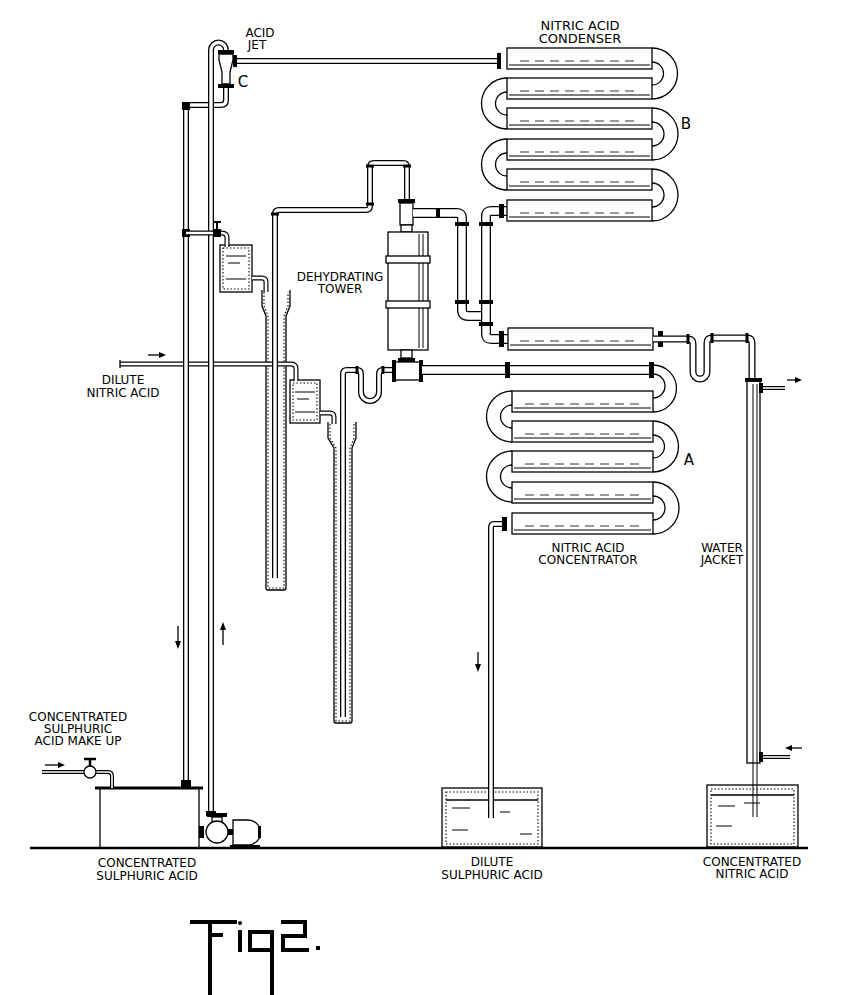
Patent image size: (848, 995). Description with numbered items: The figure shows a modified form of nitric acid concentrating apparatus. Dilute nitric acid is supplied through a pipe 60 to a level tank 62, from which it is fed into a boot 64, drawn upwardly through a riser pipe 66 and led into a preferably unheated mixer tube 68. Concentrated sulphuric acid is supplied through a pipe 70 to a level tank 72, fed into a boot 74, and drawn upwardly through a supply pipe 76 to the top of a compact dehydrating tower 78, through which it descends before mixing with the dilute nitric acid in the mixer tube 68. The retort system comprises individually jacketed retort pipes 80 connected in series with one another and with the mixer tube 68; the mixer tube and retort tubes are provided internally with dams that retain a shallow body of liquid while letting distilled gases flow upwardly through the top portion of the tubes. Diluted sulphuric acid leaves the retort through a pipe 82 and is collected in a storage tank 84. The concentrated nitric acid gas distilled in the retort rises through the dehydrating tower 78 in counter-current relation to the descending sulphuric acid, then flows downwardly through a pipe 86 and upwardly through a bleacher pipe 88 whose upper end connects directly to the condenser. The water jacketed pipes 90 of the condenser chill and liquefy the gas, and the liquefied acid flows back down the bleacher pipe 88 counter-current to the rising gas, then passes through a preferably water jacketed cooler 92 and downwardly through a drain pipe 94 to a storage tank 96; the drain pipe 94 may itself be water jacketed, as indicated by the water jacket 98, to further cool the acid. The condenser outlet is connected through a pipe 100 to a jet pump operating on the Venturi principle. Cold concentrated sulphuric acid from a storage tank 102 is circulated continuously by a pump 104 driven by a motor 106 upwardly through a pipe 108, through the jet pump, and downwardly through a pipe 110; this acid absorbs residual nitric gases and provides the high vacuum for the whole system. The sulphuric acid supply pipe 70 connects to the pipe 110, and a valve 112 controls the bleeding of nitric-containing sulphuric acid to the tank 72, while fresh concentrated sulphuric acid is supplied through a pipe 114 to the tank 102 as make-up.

The pipe 60 is at (136, 361).
The level tank 62 is at (303, 424).
The boot 64 is at (353, 534).
The riser pipe 66 is at (348, 407).
The mixer tube 68 is at (520, 378).
The pipe 70 is at (199, 230).
The level tank 72 is at (233, 294).
The boot 74 is at (286, 520).
The supply pipe 76 is at (278, 258).
The dehydrating tower 78 is at (387, 248).
The retort pipes 80 is at (598, 421).
The pipe 82 is at (495, 632).
The storage tank 84 is at (540, 822).
The pipe 86 is at (456, 262).
The bleacher pipe 88 is at (493, 272).
The water jacketed pipes 90 is at (655, 51).
The cooler 92 is at (657, 328).
The drain pipe 94 is at (757, 366).
The storage tank 96 is at (706, 795).
The water jacket 98 is at (747, 621).
The pipe 100 is at (360, 58).
The storage tank 102 is at (106, 818).
The pump 104 is at (223, 821).
The motor 106 is at (260, 824).
The pipe 108 is at (217, 497).
The pipe 110 is at (183, 487).
The valve 112 is at (221, 228).
The pipe 114 is at (58, 776).